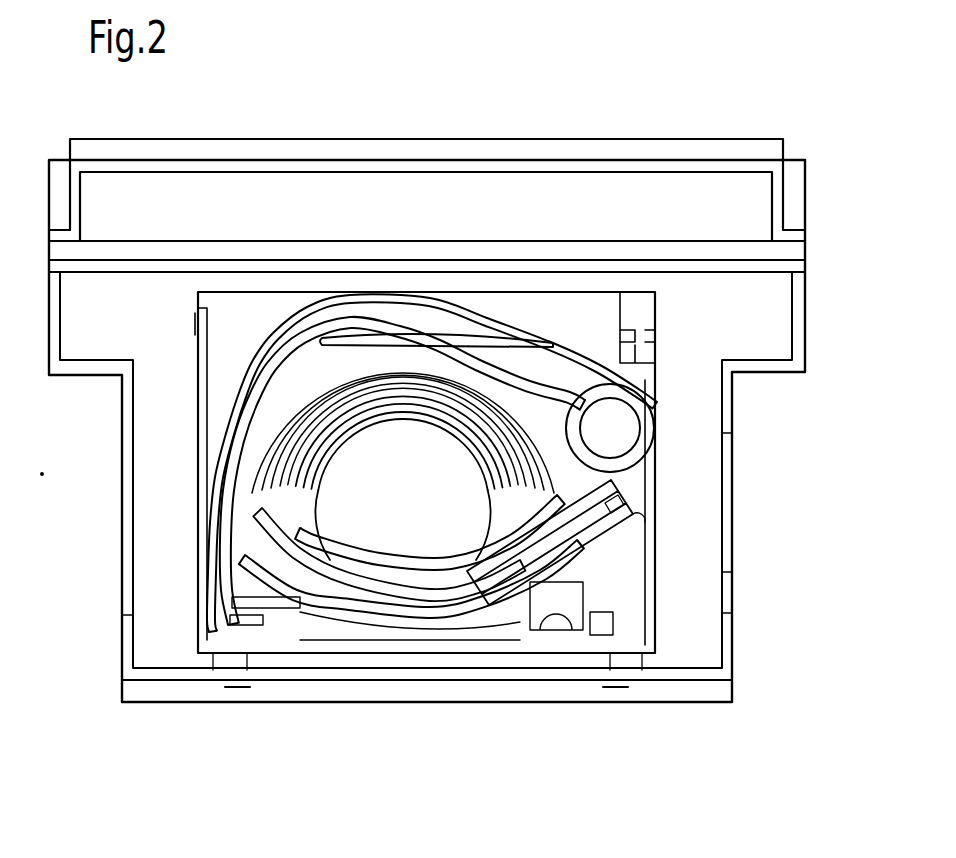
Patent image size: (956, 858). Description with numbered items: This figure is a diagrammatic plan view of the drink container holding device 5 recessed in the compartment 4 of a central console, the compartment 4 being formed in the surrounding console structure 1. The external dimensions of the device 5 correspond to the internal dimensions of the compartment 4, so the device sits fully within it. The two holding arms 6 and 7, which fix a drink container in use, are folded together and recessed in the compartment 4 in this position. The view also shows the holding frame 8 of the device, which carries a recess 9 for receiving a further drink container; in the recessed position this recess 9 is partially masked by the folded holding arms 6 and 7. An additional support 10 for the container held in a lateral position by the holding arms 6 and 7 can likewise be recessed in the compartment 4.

The housing 1 is at (732, 418).
The compartment 4 is at (657, 310).
The device 5 is at (648, 553).
The holding arm 6 is at (467, 342).
The holding arm 7 is at (363, 565).
The holding frame 8 is at (270, 302).
The recess 9 is at (240, 378).
The additional support 10 is at (450, 515).